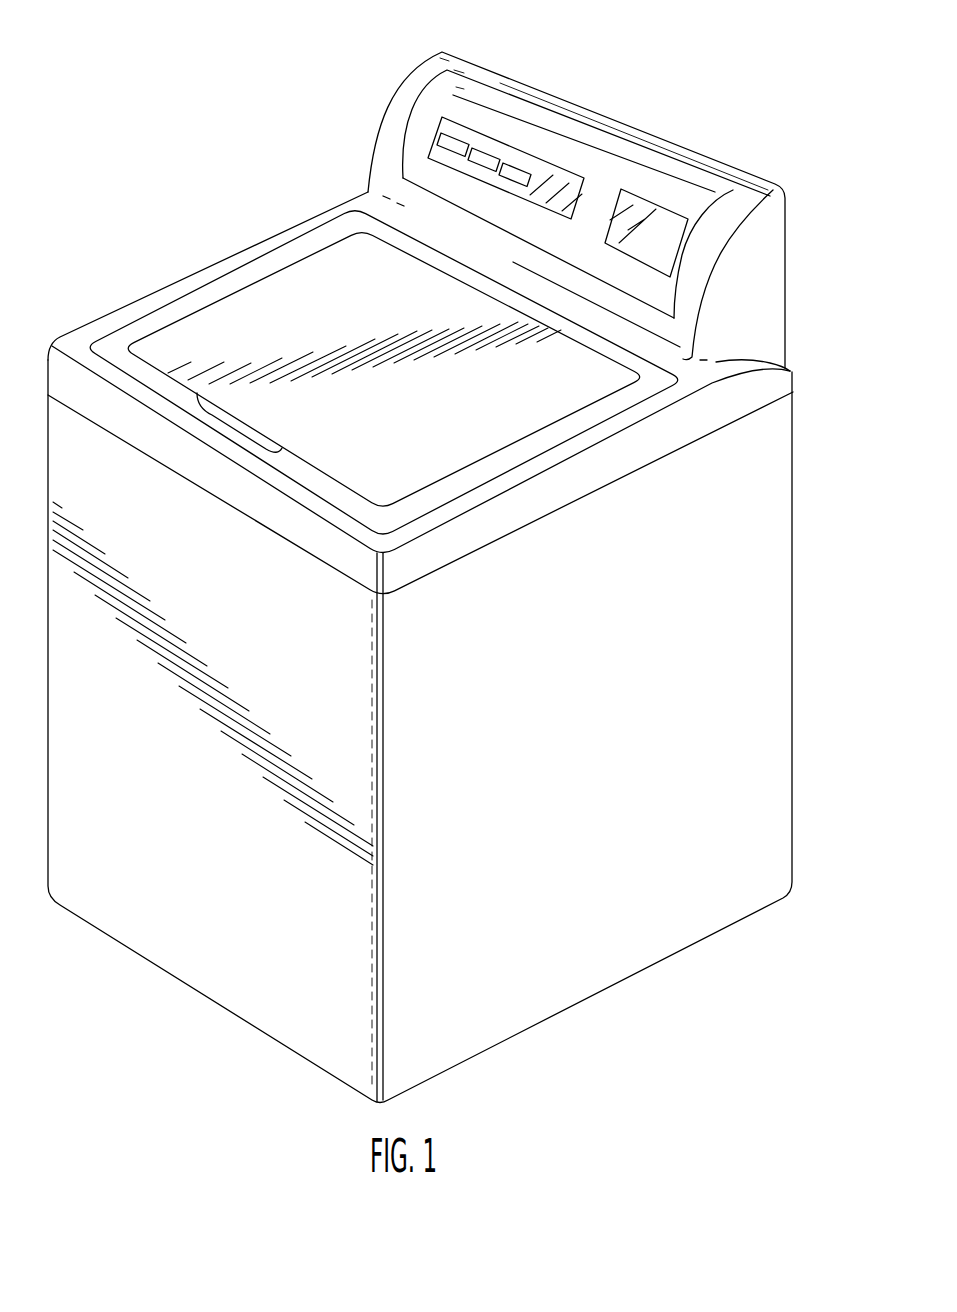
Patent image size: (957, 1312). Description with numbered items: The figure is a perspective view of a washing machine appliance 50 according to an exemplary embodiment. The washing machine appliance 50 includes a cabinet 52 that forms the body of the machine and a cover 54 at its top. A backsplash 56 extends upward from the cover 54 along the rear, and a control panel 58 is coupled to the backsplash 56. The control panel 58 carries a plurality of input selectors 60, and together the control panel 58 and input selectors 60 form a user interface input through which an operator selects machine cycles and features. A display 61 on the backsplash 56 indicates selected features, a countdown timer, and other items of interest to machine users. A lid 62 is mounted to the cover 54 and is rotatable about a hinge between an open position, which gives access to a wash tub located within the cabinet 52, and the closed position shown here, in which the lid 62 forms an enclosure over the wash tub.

The washing machine appliance 50 is at (810, 490).
The cabinet 52 is at (773, 623).
The cover 54 is at (152, 314).
The backsplash 56 is at (607, 177).
The control panel 58 is at (550, 158).
The input selectors 60 is at (519, 169).
The display 61 is at (670, 222).
The lid 62 is at (328, 290).